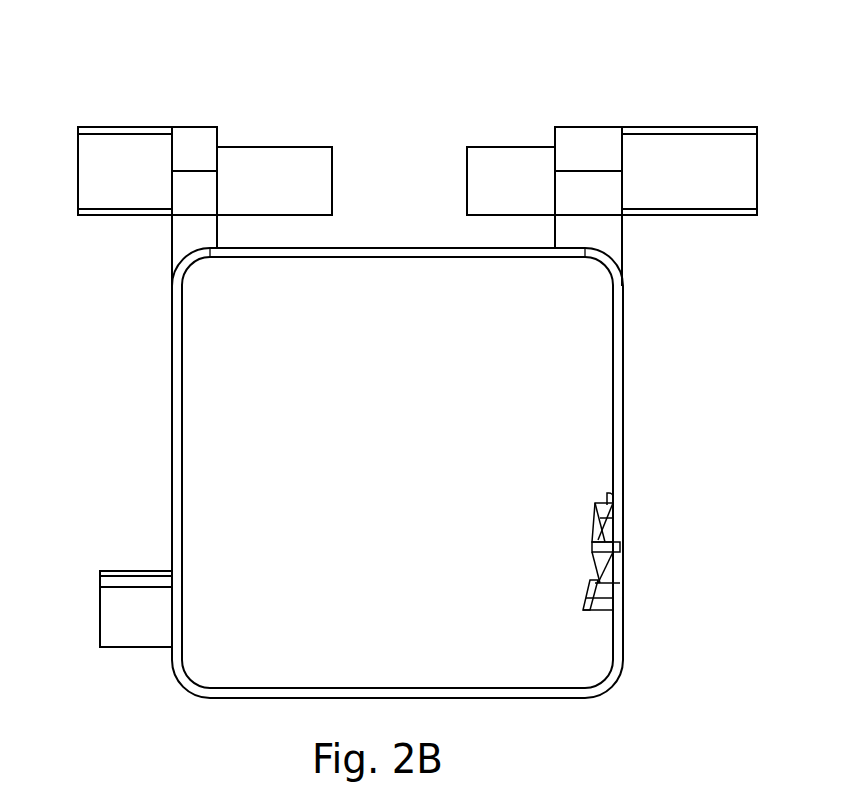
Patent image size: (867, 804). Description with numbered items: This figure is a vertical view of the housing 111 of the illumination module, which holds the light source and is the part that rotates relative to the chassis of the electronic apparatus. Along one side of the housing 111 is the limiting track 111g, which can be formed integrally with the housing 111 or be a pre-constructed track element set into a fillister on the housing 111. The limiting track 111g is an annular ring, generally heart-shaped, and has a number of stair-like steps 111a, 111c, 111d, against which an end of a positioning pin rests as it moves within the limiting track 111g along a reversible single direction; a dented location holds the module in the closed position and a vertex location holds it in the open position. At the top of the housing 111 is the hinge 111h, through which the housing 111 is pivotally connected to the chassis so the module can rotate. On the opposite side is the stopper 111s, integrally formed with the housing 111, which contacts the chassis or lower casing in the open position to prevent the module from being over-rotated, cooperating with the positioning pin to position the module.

The housing 111 is at (263, 100).
The hinge 111h is at (687, 155).
The stopper 111s is at (113, 617).
The limiting track 111g is at (627, 557).
The stair-like step 111c is at (612, 502).
The stair-like step 111d is at (595, 517).
The stair-like step 111a is at (595, 555).